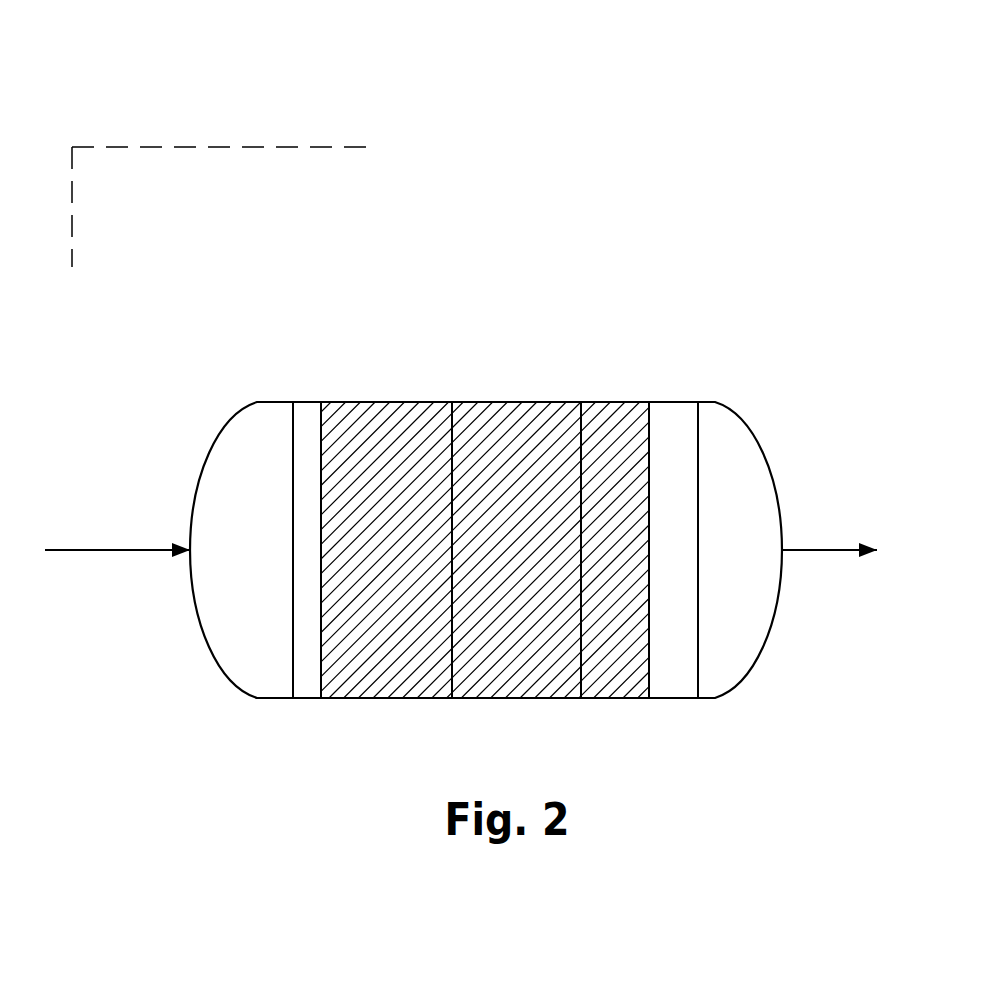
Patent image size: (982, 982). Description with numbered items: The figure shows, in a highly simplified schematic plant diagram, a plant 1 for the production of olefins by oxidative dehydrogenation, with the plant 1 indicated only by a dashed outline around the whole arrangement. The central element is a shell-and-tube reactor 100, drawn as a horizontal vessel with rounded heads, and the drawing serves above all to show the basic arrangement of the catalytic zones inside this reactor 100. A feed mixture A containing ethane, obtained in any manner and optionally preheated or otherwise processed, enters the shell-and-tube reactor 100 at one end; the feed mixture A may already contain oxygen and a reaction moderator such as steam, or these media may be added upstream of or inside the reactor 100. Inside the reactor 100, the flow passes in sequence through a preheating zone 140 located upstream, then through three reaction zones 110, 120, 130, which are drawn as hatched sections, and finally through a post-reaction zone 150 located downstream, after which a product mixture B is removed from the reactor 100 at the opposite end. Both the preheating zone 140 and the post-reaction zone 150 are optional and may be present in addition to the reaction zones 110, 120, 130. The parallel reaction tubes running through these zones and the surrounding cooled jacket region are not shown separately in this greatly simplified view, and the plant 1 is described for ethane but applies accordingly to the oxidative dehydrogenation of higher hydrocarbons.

The plant 1 is at (217, 147).
The shell-and-tube reactor 100 is at (706, 402).
The reaction zone 110 is at (391, 361).
The reaction zone 120 is at (515, 361).
The reaction zone 130 is at (633, 361).
The preheating zone 140 is at (304, 362).
The post-reaction zone 150 is at (680, 362).
The feed mixture A is at (115, 550).
The product mixture B is at (810, 550).